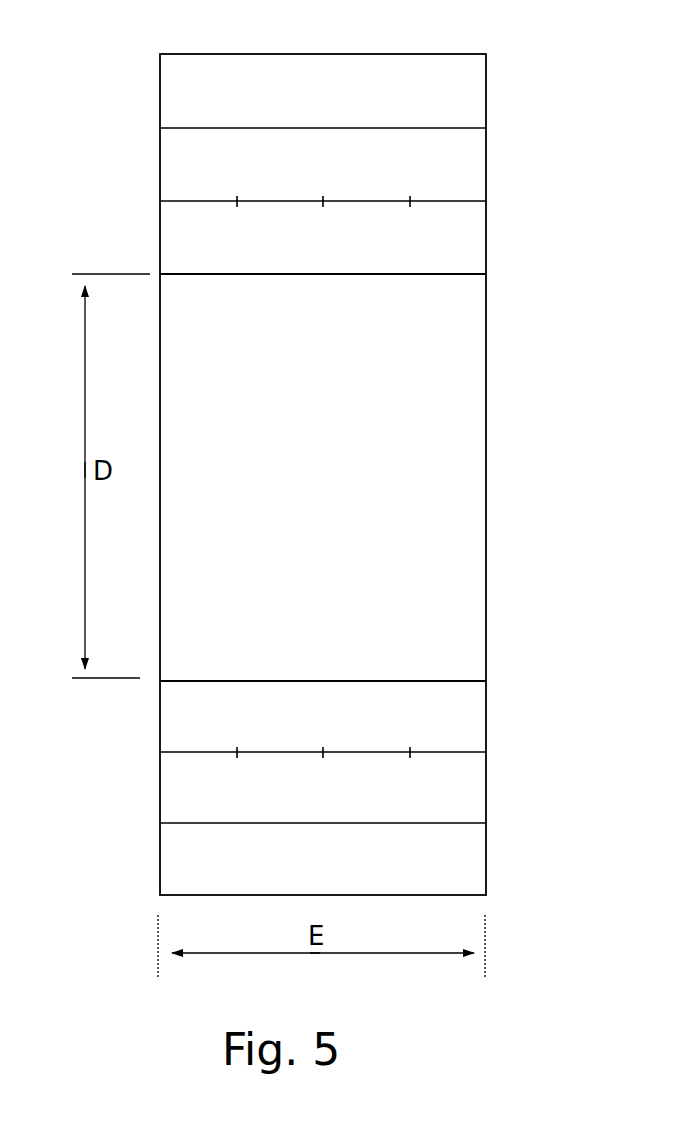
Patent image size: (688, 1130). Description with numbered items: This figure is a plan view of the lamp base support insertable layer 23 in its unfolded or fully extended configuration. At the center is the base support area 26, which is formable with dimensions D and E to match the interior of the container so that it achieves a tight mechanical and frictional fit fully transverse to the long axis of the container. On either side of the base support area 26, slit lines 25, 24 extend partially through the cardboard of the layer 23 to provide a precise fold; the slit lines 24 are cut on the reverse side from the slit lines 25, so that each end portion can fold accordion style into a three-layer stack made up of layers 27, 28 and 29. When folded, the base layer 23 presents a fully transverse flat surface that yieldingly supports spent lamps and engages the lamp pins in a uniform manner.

The base support insertable layer 23 is at (156, 51).
The slit lines 24 is at (150, 201).
The slit lines 25 is at (150, 128).
The base support area 26 is at (470, 470).
The layer 27 is at (470, 96).
The layer 28 is at (470, 160).
The layer 29 is at (470, 235).